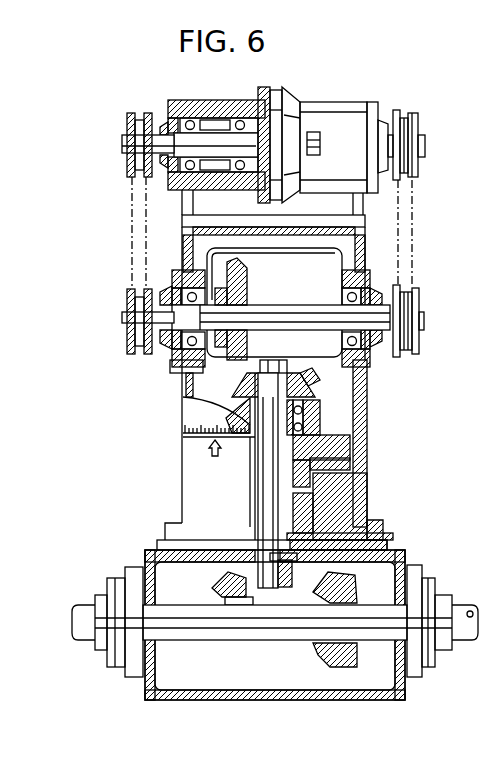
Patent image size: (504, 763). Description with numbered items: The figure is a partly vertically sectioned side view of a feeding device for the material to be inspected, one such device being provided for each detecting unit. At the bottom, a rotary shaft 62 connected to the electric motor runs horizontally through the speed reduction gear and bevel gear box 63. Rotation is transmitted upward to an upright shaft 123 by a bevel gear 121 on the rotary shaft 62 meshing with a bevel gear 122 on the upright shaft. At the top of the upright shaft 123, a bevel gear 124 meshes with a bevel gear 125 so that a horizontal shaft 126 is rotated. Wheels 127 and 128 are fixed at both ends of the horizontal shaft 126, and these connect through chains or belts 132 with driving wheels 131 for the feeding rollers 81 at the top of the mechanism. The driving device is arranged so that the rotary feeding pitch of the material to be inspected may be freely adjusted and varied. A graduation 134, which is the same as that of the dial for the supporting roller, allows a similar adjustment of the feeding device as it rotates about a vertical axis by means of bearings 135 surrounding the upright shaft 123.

The feeding roller 81 is at (285, 97).
The driving wheel 131 is at (410, 124).
The chain or belt 132 is at (148, 198).
The wheel 127 is at (128, 300).
The bevel gear 125 is at (244, 294).
The wheel 128 is at (408, 306).
The horizontal shaft 126 is at (313, 328).
The bevel gear 124 is at (247, 393).
The graduation 134 is at (183, 423).
The bearing 135 is at (318, 415).
The upright shaft 123 is at (263, 468).
The rotary shaft 62 is at (85, 610).
The bevel gear 122 is at (240, 600).
The speed reduction gear and bevel gear box 63 is at (278, 672).
The bevel gear 121 is at (340, 662).